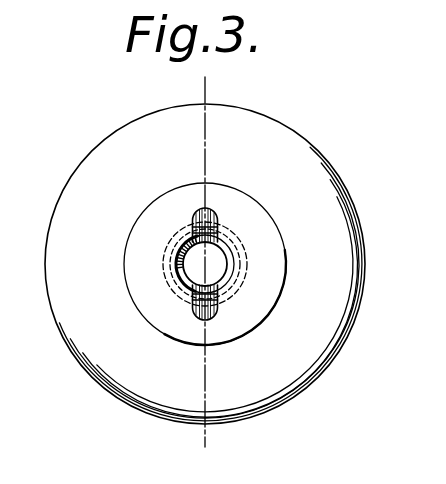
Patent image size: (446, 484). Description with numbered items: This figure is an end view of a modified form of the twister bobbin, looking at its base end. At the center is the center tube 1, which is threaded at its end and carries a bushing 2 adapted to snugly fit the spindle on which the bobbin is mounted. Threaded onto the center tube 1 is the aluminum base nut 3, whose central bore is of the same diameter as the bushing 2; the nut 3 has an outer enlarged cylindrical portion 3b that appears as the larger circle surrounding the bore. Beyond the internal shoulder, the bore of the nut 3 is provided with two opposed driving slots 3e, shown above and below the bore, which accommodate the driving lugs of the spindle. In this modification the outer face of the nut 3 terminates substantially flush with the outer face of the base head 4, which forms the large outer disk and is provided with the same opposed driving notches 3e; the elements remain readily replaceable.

The center tube 1 is at (164, 260).
The bushing 2 is at (231, 261).
The base nut 3 is at (261, 285).
The outer enlarged cylindrical portion 3b is at (141, 214).
The driving slots 3e is at (212, 211).
The base head 4 is at (220, 90).